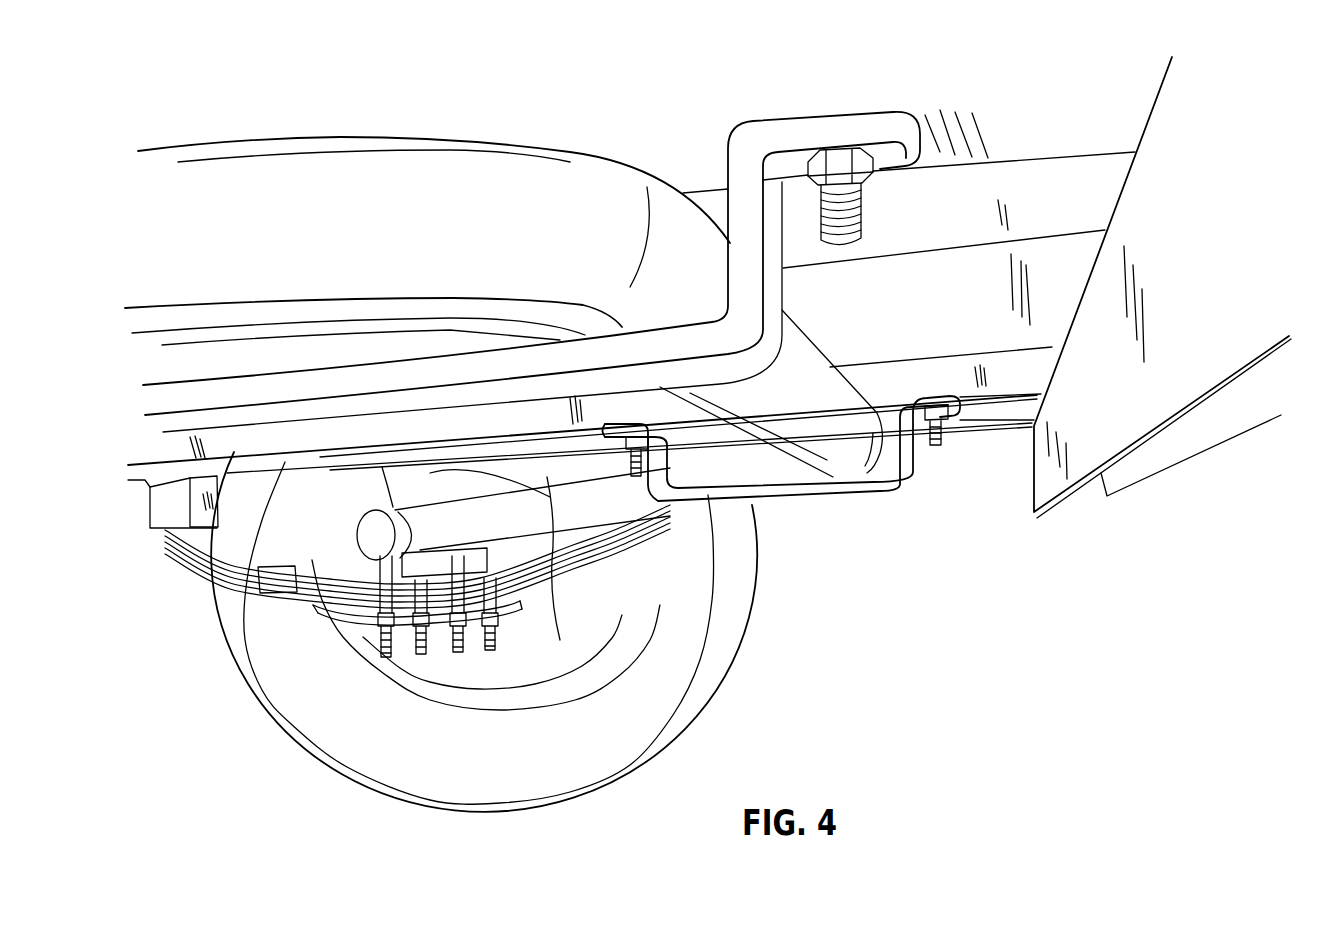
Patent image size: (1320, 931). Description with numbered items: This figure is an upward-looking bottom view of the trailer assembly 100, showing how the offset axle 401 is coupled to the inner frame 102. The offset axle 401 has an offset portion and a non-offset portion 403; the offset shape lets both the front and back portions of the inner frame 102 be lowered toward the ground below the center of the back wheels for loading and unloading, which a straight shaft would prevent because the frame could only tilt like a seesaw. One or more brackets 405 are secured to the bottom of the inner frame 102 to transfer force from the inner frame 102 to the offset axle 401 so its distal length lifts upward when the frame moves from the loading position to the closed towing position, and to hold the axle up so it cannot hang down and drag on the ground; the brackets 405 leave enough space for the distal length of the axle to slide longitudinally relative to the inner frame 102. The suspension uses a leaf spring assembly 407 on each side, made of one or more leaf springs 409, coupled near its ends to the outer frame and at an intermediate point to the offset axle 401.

The trailer assembly 100 is at (1073, 508).
The inner frame 102 is at (993, 438).
The offset axle 401 is at (603, 498).
The non-offset portion 403 is at (410, 605).
The bracket 405 is at (752, 140).
The leaf spring assembly 407 is at (350, 610).
The leaf spring 409 is at (527, 601).